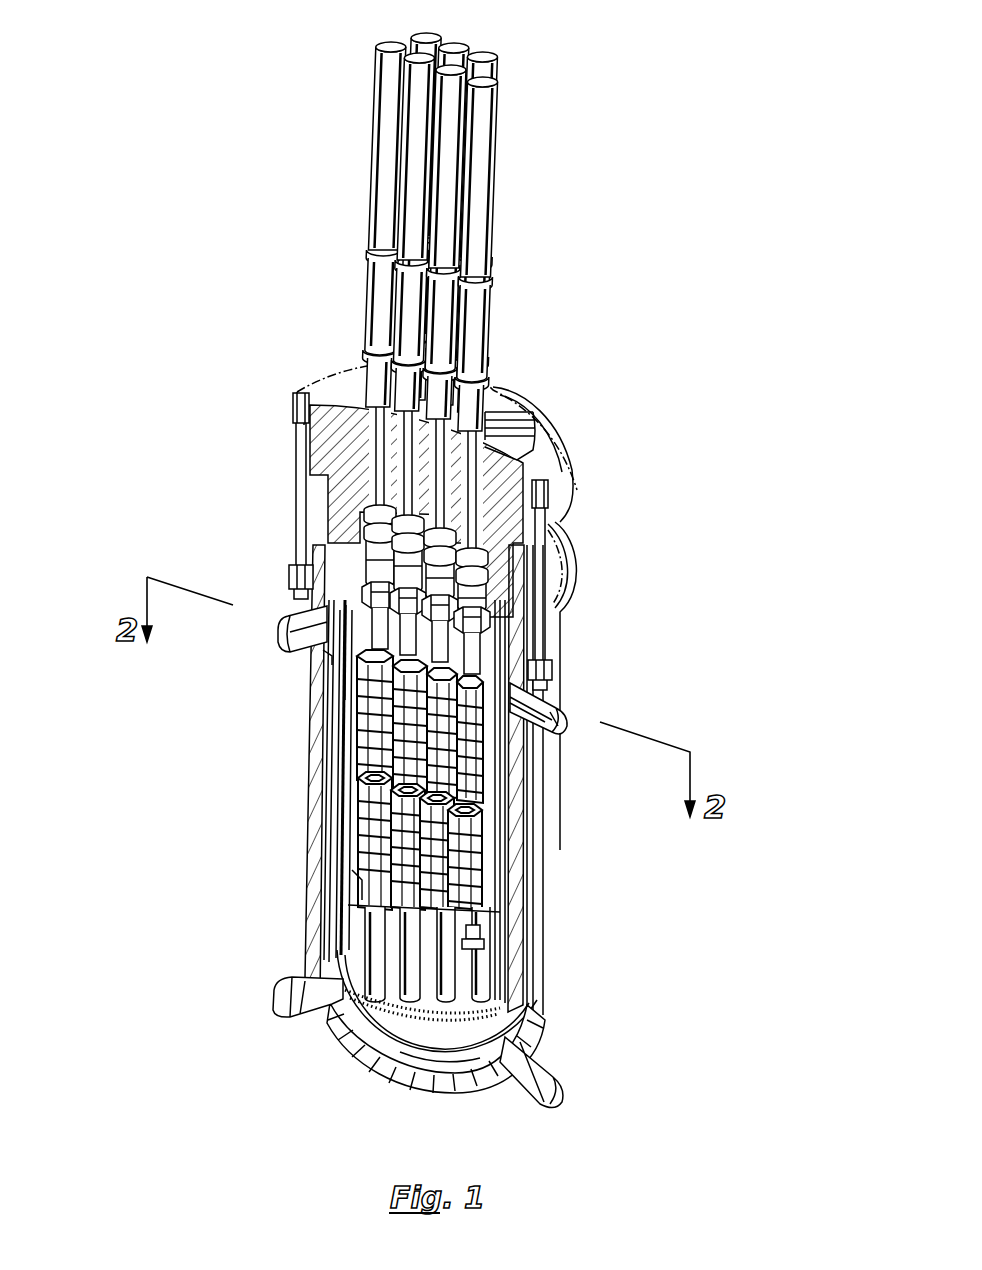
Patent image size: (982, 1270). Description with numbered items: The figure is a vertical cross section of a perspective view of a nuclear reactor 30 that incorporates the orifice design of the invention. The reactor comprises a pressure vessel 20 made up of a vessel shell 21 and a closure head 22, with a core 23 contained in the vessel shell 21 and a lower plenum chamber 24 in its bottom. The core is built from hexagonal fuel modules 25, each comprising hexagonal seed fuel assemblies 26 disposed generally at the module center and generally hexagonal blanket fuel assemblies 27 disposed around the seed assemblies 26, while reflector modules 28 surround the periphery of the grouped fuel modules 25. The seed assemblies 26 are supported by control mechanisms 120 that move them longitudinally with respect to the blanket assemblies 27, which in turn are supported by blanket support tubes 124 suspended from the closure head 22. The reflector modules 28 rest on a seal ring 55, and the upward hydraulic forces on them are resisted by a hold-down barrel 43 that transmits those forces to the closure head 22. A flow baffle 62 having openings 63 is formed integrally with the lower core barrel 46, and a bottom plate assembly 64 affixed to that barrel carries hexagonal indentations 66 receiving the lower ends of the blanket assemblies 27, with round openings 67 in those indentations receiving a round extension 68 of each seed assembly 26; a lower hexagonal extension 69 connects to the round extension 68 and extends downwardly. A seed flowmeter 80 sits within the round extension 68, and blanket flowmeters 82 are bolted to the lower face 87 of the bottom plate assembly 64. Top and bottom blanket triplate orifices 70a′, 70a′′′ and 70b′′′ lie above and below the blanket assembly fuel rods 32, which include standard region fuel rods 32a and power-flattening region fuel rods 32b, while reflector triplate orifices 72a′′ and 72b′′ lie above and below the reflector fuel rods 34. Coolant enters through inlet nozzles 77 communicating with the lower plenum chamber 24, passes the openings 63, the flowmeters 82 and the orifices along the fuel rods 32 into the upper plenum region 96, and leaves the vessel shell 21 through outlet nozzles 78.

The control mechanisms 120 is at (388, 133).
The reactor 30 is at (520, 385).
The closure head 22 is at (517, 413).
The blanket support tubes 124 is at (380, 458).
The hold-down barrel 43 is at (363, 523).
The upper plenum region 96 is at (367, 560).
The pressure vessel 20 is at (575, 592).
The outlet nozzles 78 is at (300, 626).
The top reflector assembly triplate orifice 72a′′ is at (325, 660).
The reflector modules 28 is at (345, 707).
The top blanket assembly triplate orifice 70a′ is at (453, 657).
The top blanket assembly triplate orifice 70a′′′ is at (550, 680).
The seal ring 55 is at (562, 710).
The vessel shell 21 is at (537, 790).
The seed fuel assemblies 26 is at (380, 775).
The blanket fuel assemblies 27 is at (365, 788).
The fuel modules 25 is at (366, 797).
The fuel rods 34 is at (360, 818).
The core 23 is at (380, 852).
The bottom reflector assembly triplate orifice 72b′′ is at (375, 872).
The fuel rods 32b is at (400, 912).
The lower face 87 is at (375, 935).
The blanket assembly fuel rods 32 is at (473, 848).
The lower core barrel 46 is at (500, 865).
The fuel rods 32a is at (470, 877).
The bottom blanket assembly triplate orifice 70b′′′ is at (482, 918).
The bottom plate assembly 64 is at (476, 935).
The hexagonal indentations 66 is at (470, 946).
The round openings 67 is at (470, 956).
The lower hexagonal extension 69 is at (490, 1005).
The inlet nozzles 77 is at (290, 1000).
The round extension 68 is at (377, 985).
The blanket flowmeters 82 is at (405, 1002).
The lower plenum chamber 24 is at (387, 1050).
The openings 63 is at (440, 1040).
The flow baffle 62 is at (473, 1047).
The seed flowmeter 80 is at (490, 1075).